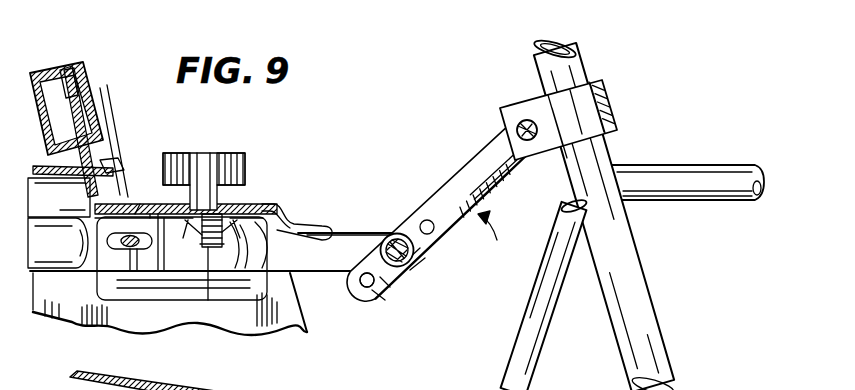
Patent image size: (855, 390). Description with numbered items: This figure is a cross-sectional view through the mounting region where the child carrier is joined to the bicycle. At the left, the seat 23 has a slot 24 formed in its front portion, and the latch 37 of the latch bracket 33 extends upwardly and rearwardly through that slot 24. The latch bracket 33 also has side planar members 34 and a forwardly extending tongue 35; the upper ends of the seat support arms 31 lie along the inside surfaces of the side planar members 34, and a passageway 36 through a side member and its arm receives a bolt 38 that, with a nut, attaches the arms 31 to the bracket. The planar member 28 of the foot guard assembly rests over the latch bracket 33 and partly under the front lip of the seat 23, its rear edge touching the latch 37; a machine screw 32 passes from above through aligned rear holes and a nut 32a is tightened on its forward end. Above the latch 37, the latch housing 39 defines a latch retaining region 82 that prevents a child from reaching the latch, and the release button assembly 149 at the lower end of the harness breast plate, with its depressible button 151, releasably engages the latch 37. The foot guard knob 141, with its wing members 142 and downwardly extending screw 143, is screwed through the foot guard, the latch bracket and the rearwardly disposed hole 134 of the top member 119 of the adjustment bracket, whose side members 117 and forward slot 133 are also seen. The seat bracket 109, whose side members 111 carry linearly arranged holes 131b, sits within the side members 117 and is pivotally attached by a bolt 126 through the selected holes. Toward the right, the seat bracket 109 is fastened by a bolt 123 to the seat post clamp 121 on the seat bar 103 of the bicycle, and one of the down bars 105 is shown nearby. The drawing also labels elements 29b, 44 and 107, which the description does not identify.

The seat 23 is at (80, 185).
The slot 24 is at (58, 243).
The planar member 28 is at (262, 200).
The bracket 29b is at (308, 323).
The seat support arms 31 is at (98, 287).
The machine screw 32 is at (117, 204).
The nut 32a is at (145, 292).
The latch bracket 33 is at (155, 200).
The side planar members 34 is at (63, 312).
The tongue 35 is at (318, 228).
The passageway 36 is at (135, 249).
The latch 37 is at (123, 150).
The bolt 38 is at (117, 249).
The latch housing 39 is at (100, 85).
The slot 44 is at (233, 265).
The latch retaining region 82 is at (97, 110).
The seat bar 103 is at (620, 252).
The down bars 105 is at (537, 337).
The cross tube 107 is at (698, 177).
The seat bracket 109 is at (495, 243).
The side members 111 is at (455, 188).
The side members 117 is at (307, 233).
The top member 119 is at (230, 260).
The seat post clamp 121 is at (583, 105).
The bolt 123 is at (522, 130).
The bolt 126 is at (395, 233).
The holes 131b is at (434, 232).
The forward slot 133 is at (283, 272).
The hole 134 is at (180, 238).
The foot guard knob 141 is at (210, 150).
The wing members 142 is at (173, 157).
The screw 143 is at (207, 300).
The release button assembly 149 is at (32, 77).
The button 151 is at (97, 63).